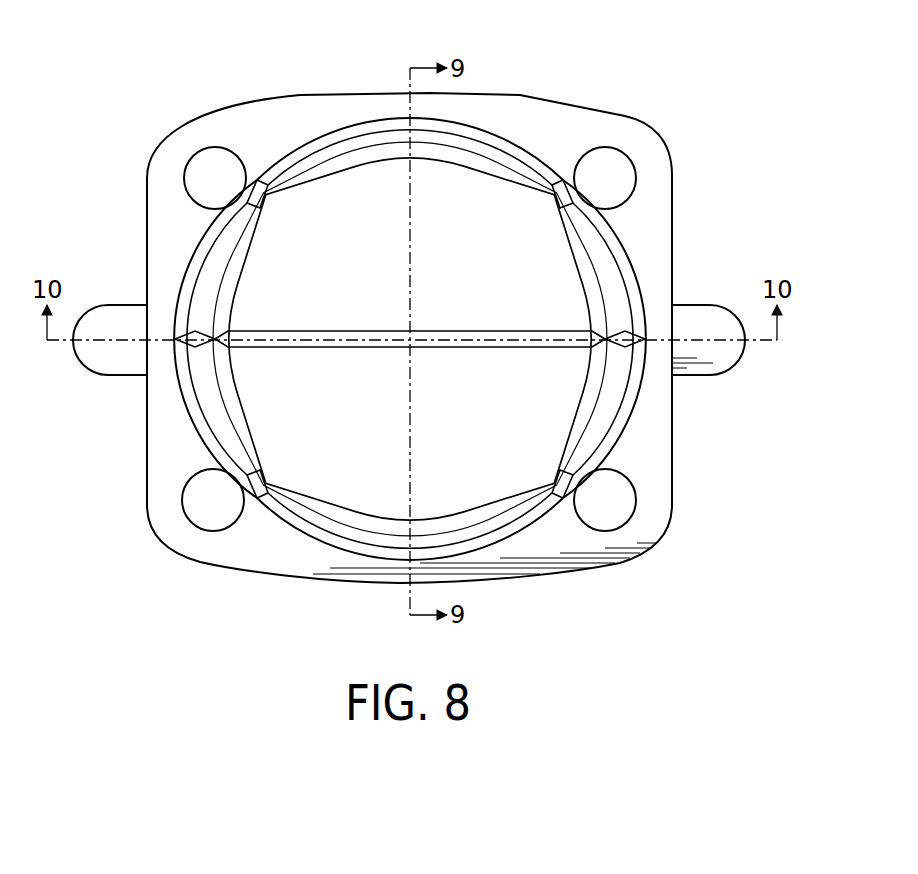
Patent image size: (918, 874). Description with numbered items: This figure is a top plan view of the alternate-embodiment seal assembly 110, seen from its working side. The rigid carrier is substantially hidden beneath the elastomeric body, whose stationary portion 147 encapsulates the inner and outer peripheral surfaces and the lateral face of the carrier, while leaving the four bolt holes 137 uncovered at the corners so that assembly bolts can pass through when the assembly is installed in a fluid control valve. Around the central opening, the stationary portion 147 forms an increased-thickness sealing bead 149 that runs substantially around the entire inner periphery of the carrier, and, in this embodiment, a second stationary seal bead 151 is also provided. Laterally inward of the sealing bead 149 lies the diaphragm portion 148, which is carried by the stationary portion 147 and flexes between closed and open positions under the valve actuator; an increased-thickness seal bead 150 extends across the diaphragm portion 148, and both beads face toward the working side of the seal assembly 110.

The seal assembly 110 is at (582, 104).
The bolt holes 137 is at (636, 183).
The stationary portion 147 is at (294, 141).
The diaphragm portion 148 is at (365, 287).
The sealing bead 149 is at (538, 163).
The seal bead 150 is at (459, 333).
The second stationary seal bead 151 is at (323, 166).